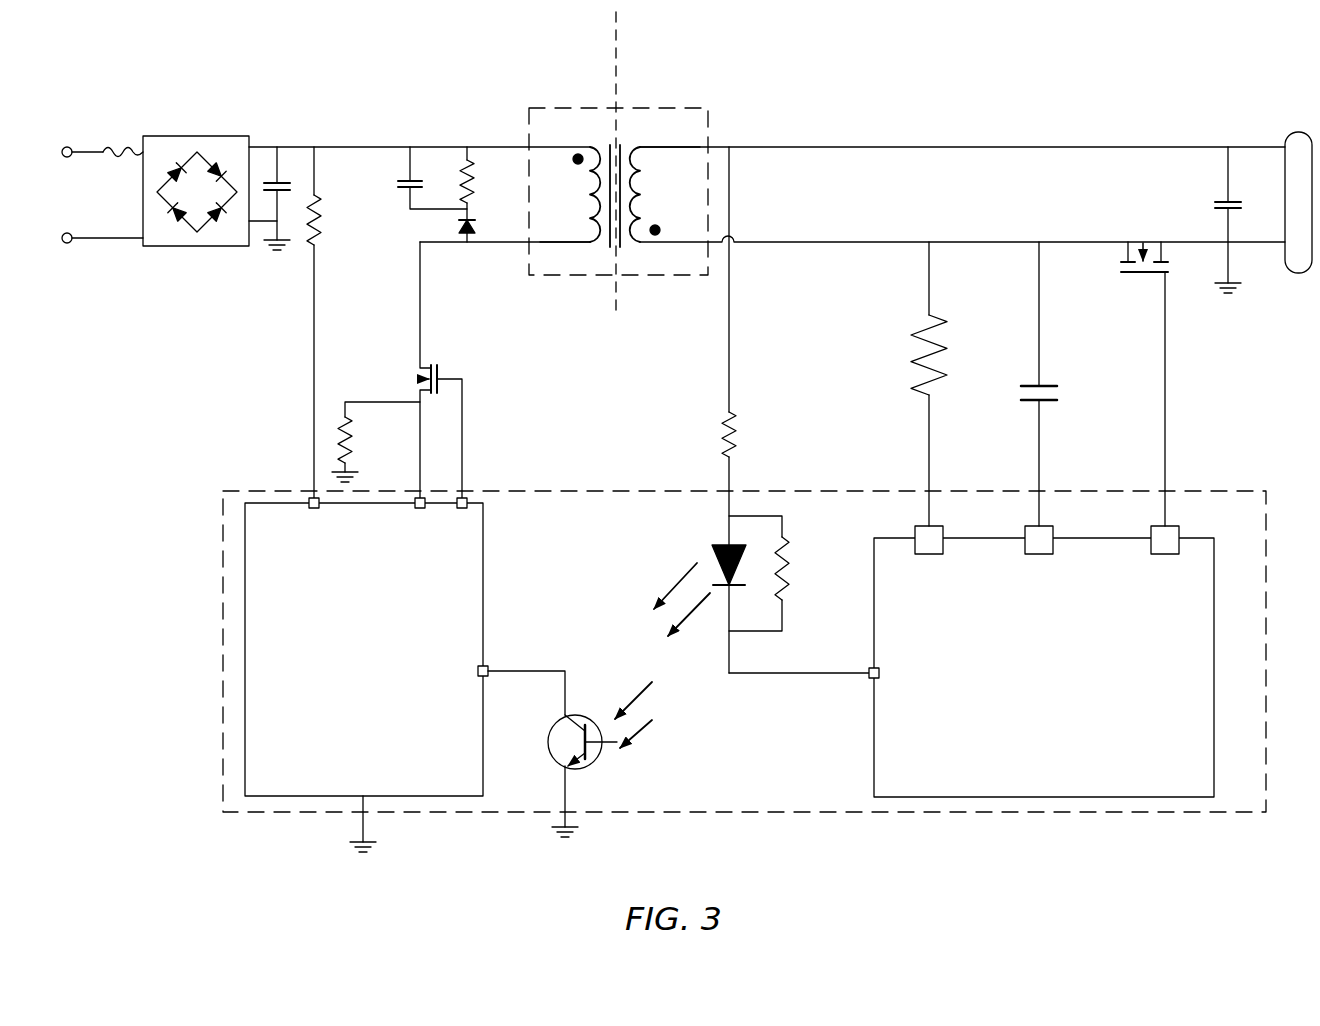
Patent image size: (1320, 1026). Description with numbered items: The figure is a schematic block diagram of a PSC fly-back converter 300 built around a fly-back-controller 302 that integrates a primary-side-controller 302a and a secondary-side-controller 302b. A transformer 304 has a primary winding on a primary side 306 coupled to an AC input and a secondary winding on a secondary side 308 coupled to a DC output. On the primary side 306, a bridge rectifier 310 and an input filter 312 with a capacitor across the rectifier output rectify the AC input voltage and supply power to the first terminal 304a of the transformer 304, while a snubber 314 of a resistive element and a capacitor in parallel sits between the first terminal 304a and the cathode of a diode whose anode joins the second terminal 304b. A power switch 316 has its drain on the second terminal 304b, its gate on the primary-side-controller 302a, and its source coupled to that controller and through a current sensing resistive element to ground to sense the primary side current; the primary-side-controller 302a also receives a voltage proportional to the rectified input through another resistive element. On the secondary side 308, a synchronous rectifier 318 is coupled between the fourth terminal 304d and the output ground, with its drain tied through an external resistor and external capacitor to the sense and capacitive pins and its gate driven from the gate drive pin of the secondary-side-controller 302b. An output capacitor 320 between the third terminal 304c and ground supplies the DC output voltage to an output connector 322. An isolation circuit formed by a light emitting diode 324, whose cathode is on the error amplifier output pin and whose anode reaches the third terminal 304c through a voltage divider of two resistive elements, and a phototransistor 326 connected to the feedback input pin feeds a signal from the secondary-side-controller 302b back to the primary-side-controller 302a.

The PSC fly-back converter 300 is at (136, 81).
The fly-back-controller 302 is at (844, 760).
The primary-side-controller 302a is at (343, 675).
The secondary-side-controller 302b is at (1024, 675).
The transformer 304 is at (529, 109).
The first terminal 304a is at (570, 146).
The second terminal 304b is at (580, 246).
The third terminal 304c is at (684, 146).
The fourth terminal 304d is at (674, 246).
The primary side 306 is at (588, 37).
The secondary side 308 is at (667, 37).
The bridge rectifier 310 is at (197, 136).
The input filter 312 is at (277, 138).
The snubber 314 is at (440, 136).
The power switch 316 is at (419, 378).
The synchronous rectifier 318 is at (1147, 237).
The output capacitor 320 is at (1216, 198).
The output connector 322 is at (1296, 130).
The light emitting diode 324 is at (718, 545).
The phototransistor 326 is at (585, 770).